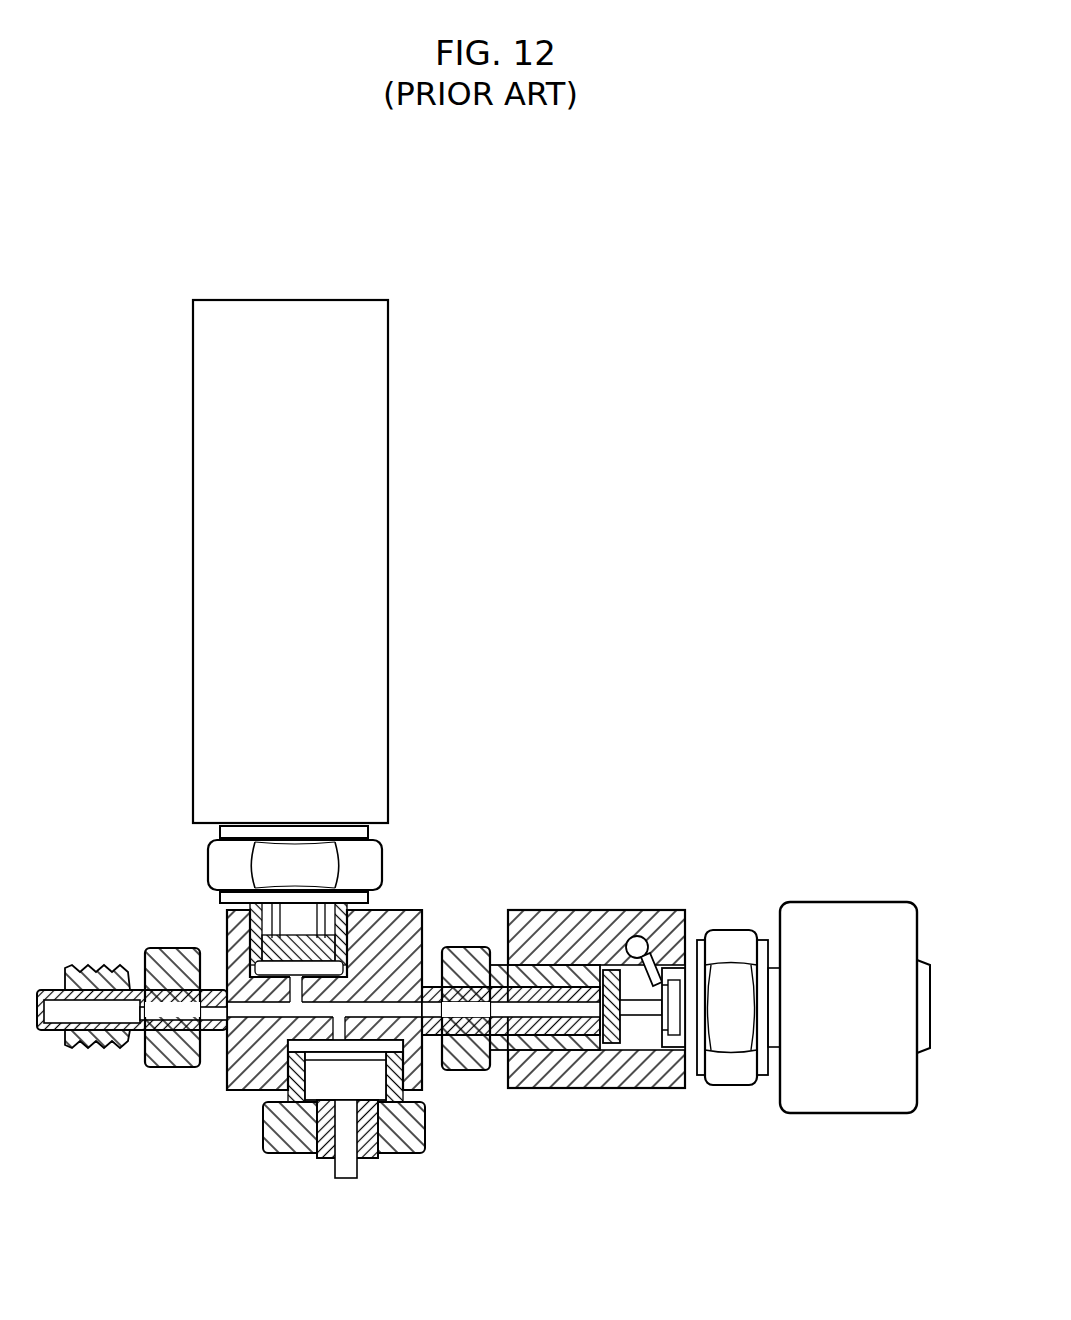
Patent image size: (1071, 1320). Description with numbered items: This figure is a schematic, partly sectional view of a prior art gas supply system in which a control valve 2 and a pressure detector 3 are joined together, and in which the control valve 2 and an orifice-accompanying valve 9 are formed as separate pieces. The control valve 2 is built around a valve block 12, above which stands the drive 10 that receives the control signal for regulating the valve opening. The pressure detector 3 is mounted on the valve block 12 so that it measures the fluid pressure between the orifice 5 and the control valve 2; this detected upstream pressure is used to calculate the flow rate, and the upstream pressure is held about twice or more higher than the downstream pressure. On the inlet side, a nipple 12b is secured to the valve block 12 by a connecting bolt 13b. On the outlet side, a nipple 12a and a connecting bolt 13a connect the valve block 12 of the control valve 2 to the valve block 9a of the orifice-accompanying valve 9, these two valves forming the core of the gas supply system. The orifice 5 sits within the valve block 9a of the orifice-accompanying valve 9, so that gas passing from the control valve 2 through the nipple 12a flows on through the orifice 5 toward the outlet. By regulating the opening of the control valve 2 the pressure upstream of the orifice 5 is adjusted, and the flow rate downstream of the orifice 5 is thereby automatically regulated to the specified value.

The control valve 2 is at (287, 637).
The drive 10 is at (388, 480).
The valve block 12 is at (235, 1086).
The nipple 12a is at (472, 987).
The nipple 12b is at (118, 968).
The connecting bolt 13a is at (473, 1072).
The connecting bolt 13b is at (160, 1052).
The pressure detector 3 is at (325, 1077).
The orifice 5 is at (610, 1045).
The orifice-accompanying valve 9 is at (735, 1103).
The valve block 9a is at (613, 910).